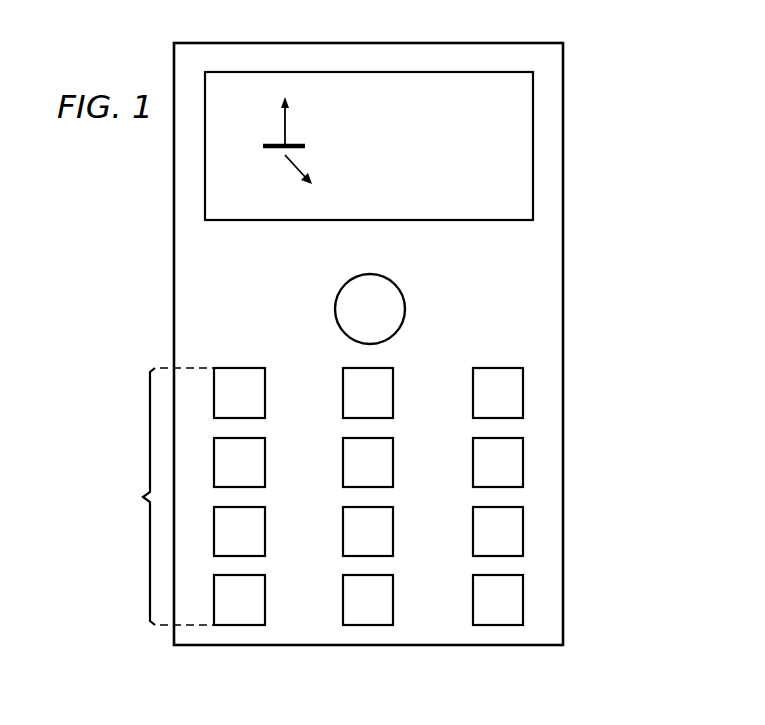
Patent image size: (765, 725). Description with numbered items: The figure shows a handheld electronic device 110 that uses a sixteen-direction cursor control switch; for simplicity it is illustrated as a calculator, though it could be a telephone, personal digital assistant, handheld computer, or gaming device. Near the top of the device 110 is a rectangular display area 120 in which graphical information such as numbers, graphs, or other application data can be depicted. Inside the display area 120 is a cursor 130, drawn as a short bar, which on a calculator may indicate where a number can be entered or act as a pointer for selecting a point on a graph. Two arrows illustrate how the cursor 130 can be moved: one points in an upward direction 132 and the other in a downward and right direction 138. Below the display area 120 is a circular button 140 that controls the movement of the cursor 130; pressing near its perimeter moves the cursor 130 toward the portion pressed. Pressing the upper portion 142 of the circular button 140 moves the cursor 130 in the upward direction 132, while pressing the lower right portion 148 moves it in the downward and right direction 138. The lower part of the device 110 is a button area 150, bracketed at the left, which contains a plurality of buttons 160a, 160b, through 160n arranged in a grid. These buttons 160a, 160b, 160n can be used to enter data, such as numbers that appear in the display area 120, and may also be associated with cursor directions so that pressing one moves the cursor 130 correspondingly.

The device 110 is at (563, 249).
The display area 120 is at (452, 222).
The cursor 130 is at (297, 140).
The upward direction 132 is at (283, 120).
The downward and right direction 138 is at (292, 166).
The circular button 140 is at (335, 308).
The upper portion 142 is at (368, 282).
The lower right portion 148 is at (390, 325).
The button area 150 is at (161, 496).
The button 160a is at (265, 390).
The button 160b is at (265, 460).
The button 160n is at (473, 600).